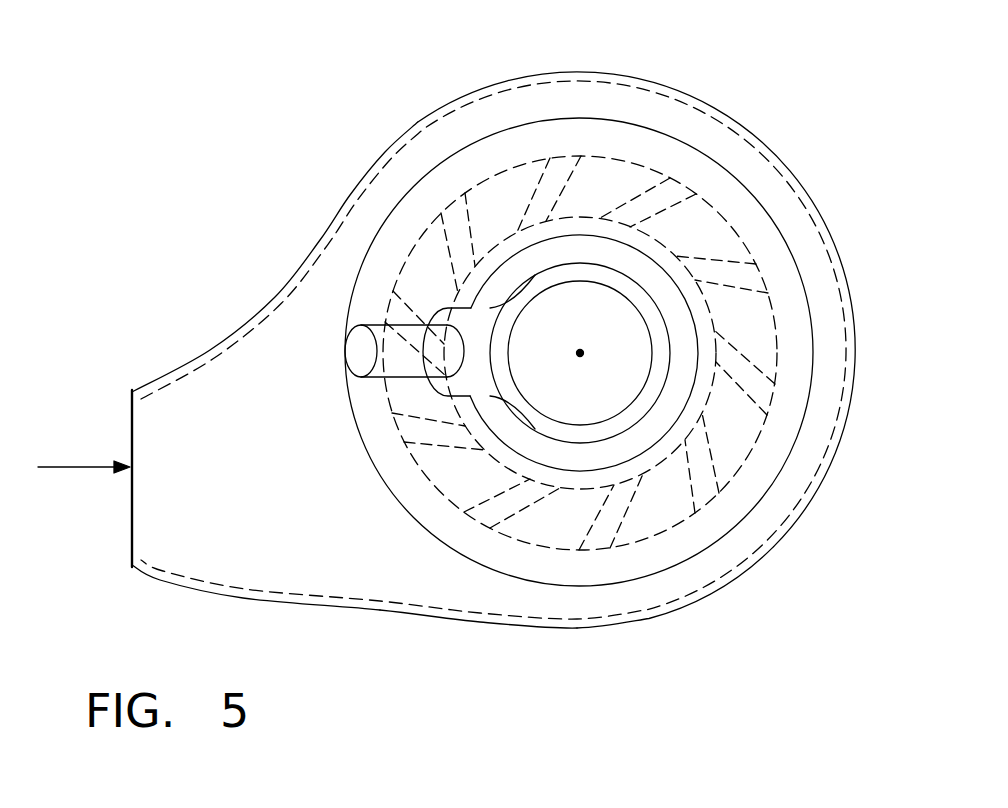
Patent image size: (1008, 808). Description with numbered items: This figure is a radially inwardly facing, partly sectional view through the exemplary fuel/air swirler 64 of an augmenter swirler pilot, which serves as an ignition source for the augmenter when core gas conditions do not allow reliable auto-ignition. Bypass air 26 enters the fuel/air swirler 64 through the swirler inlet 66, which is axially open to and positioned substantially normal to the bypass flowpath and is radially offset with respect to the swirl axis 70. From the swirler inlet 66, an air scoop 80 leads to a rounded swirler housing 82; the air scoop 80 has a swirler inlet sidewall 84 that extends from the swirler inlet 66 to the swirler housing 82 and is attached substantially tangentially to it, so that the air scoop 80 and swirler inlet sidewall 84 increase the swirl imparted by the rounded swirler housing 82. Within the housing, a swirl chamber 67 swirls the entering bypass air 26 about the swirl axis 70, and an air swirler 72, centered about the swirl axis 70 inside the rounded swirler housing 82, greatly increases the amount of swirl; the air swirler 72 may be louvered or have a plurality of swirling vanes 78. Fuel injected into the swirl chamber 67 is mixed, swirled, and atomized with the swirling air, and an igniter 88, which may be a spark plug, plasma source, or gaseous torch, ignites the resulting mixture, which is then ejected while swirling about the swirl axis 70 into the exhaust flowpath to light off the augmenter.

The fuel/air swirler 64 is at (248, 85).
The swirler inlet 66 is at (130, 520).
The bypass air 26 is at (80, 456).
The swirl chamber 67 is at (830, 394).
The swirl axis 70 is at (588, 340).
The air swirler 72 is at (670, 178).
The swirling vanes 78 is at (720, 253).
The air scoop 80 is at (237, 600).
The rounded swirler housing 82 is at (657, 617).
The swirler inlet sidewall 84 is at (428, 616).
The igniter 88 is at (378, 323).